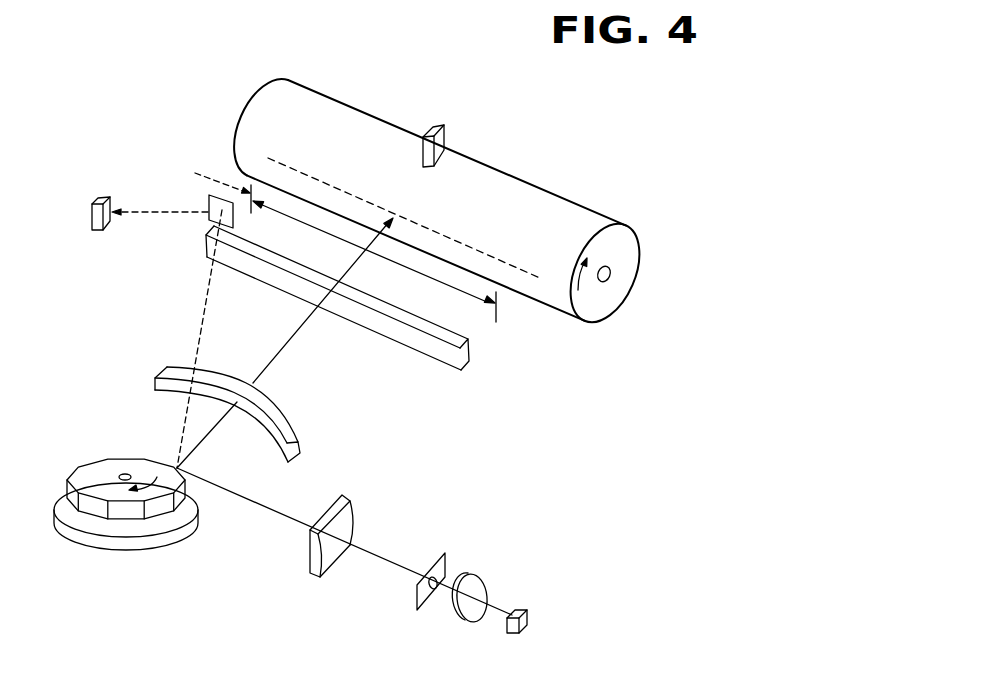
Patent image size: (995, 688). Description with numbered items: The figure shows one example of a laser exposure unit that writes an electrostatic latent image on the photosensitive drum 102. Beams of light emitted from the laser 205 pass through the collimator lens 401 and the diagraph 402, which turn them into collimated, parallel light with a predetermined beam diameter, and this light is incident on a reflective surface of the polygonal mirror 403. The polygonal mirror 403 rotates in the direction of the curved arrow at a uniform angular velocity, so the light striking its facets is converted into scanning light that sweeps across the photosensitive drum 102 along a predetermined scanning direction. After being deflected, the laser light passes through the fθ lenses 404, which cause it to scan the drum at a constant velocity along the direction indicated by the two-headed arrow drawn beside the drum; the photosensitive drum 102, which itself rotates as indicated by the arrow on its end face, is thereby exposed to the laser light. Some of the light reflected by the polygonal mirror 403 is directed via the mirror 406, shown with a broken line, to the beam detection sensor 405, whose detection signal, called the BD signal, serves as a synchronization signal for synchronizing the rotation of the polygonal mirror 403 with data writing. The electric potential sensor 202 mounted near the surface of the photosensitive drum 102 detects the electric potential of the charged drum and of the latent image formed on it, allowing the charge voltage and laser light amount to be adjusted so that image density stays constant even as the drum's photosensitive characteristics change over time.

The photosensitive drum 102 is at (558, 218).
The electric potential sensor 202 is at (433, 126).
The laser 205 is at (513, 608).
The collimator lens 401 is at (468, 572).
The diagraph 402 is at (430, 570).
The polygonal mirror 403 is at (92, 512).
The fθ lenses 404 is at (205, 222).
The beam detection sensor 405 is at (100, 203).
The mirror 406 is at (208, 205).